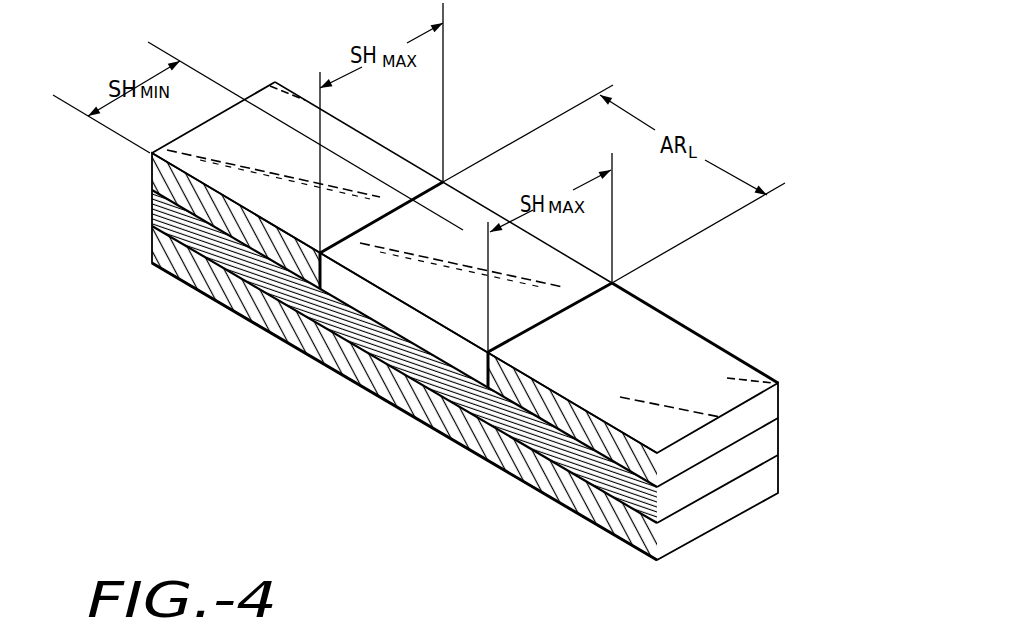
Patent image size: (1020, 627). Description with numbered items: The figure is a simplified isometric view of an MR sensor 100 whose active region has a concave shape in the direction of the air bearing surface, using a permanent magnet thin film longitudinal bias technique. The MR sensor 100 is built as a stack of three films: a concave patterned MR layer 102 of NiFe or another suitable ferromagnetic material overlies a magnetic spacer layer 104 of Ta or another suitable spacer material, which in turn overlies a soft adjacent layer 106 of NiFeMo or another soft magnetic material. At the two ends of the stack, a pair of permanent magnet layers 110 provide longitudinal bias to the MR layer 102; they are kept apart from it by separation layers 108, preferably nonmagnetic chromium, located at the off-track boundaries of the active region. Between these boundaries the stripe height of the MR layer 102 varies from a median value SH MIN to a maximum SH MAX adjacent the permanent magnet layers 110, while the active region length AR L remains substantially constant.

The MR sensor 100 is at (236, 421).
The concave patterned MR layer 102 is at (613, 283).
The magnetic spacer layer 104 is at (152, 203).
The soft adjacent layer 106 is at (152, 237).
The separation layers 108 is at (182, 270).
The permanent magnet layers 110 is at (268, 87).